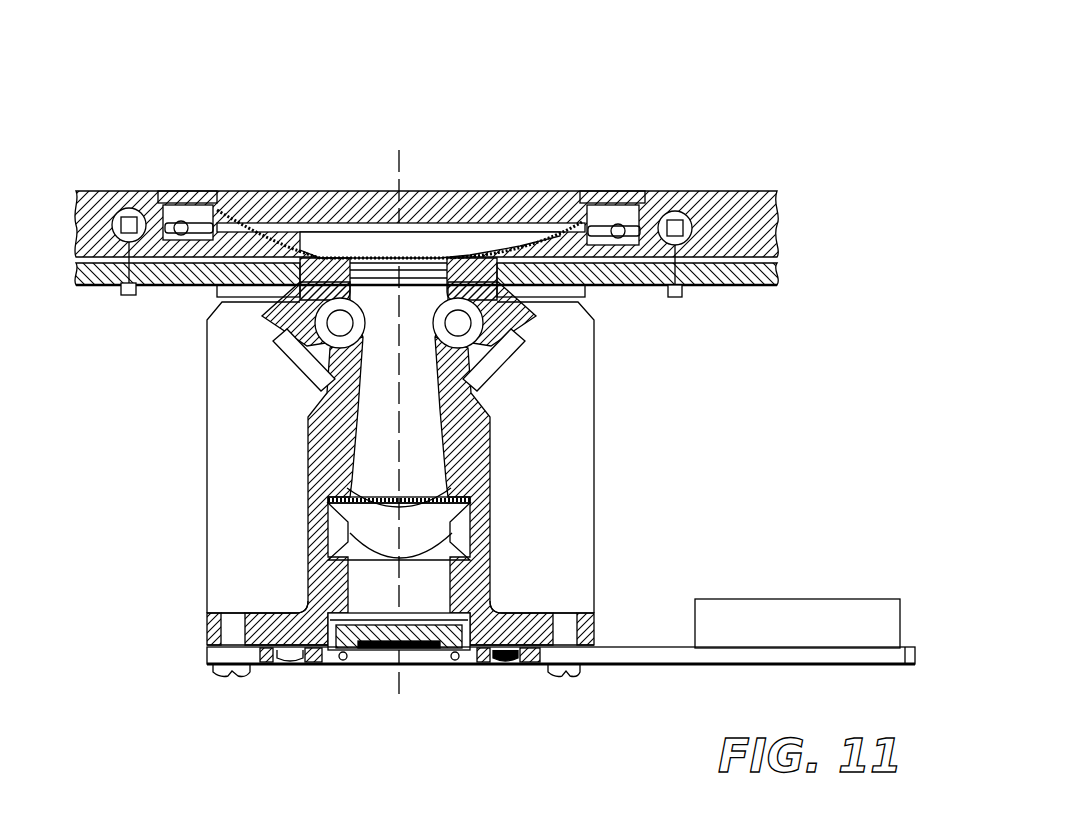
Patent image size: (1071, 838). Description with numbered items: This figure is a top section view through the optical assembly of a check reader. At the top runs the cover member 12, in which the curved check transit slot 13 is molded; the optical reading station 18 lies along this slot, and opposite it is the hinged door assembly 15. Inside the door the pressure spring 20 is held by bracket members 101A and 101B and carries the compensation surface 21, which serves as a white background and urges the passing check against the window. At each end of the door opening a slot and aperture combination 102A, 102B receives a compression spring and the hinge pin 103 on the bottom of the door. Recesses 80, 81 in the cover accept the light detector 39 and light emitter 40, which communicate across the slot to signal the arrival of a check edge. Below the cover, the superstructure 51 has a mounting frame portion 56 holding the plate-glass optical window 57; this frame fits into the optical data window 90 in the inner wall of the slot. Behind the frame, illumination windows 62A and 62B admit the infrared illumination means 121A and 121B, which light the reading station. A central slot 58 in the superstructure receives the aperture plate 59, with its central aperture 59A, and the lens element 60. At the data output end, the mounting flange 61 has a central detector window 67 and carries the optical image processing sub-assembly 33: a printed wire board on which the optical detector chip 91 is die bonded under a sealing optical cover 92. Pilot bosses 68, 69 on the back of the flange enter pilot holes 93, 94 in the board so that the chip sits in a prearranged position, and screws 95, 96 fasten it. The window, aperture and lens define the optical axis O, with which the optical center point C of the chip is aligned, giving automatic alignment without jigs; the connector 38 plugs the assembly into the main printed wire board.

The cover member 12 is at (763, 212).
The check transit slot 13 is at (770, 264).
The door assembly 15 is at (514, 186).
The optical reading station 18 is at (425, 247).
The pressure spring 20 is at (258, 208).
The compensation surface 21 is at (360, 192).
The optical image processing sub-assembly 33 is at (664, 646).
The connector 38 is at (805, 616).
The light detector 39 is at (676, 220).
The light emitter 40 is at (684, 298).
The superstructure 51 is at (492, 475).
The mounting frame portion 56 is at (560, 293).
The optical window 57 is at (455, 257).
The central slot 58 is at (495, 545).
The aperture plate 59 is at (310, 478).
The central aperture 59A is at (492, 498).
The lens element 60 is at (310, 540).
The mounting flange 61 is at (290, 606).
The illumination window 62A is at (290, 352).
The illumination window 62B is at (520, 352).
The central detector window 67 is at (456, 661).
The pilot boss 68 is at (290, 665).
The pilot boss 69 is at (497, 660).
The recess 80 is at (98, 191).
The recess 81 is at (121, 291).
The optical data window 90 is at (304, 200).
The optical detector chip 91 is at (207, 210).
The optical cover 92 is at (330, 650).
The pilot hole 93 is at (280, 665).
The pilot hole 94 is at (515, 665).
The screw 95 is at (214, 671).
The screw 96 is at (576, 677).
The bracket member 101A is at (545, 228).
The bracket member 101B is at (212, 286).
The slot and aperture combination 102A is at (605, 205).
The slot and aperture combination 102B is at (160, 192).
The hinge pin 103 is at (383, 192).
The illumination means 121A is at (302, 370).
The illumination means 121B is at (492, 354).
The optical center point C is at (392, 652).
The optical axis O is at (410, 428).